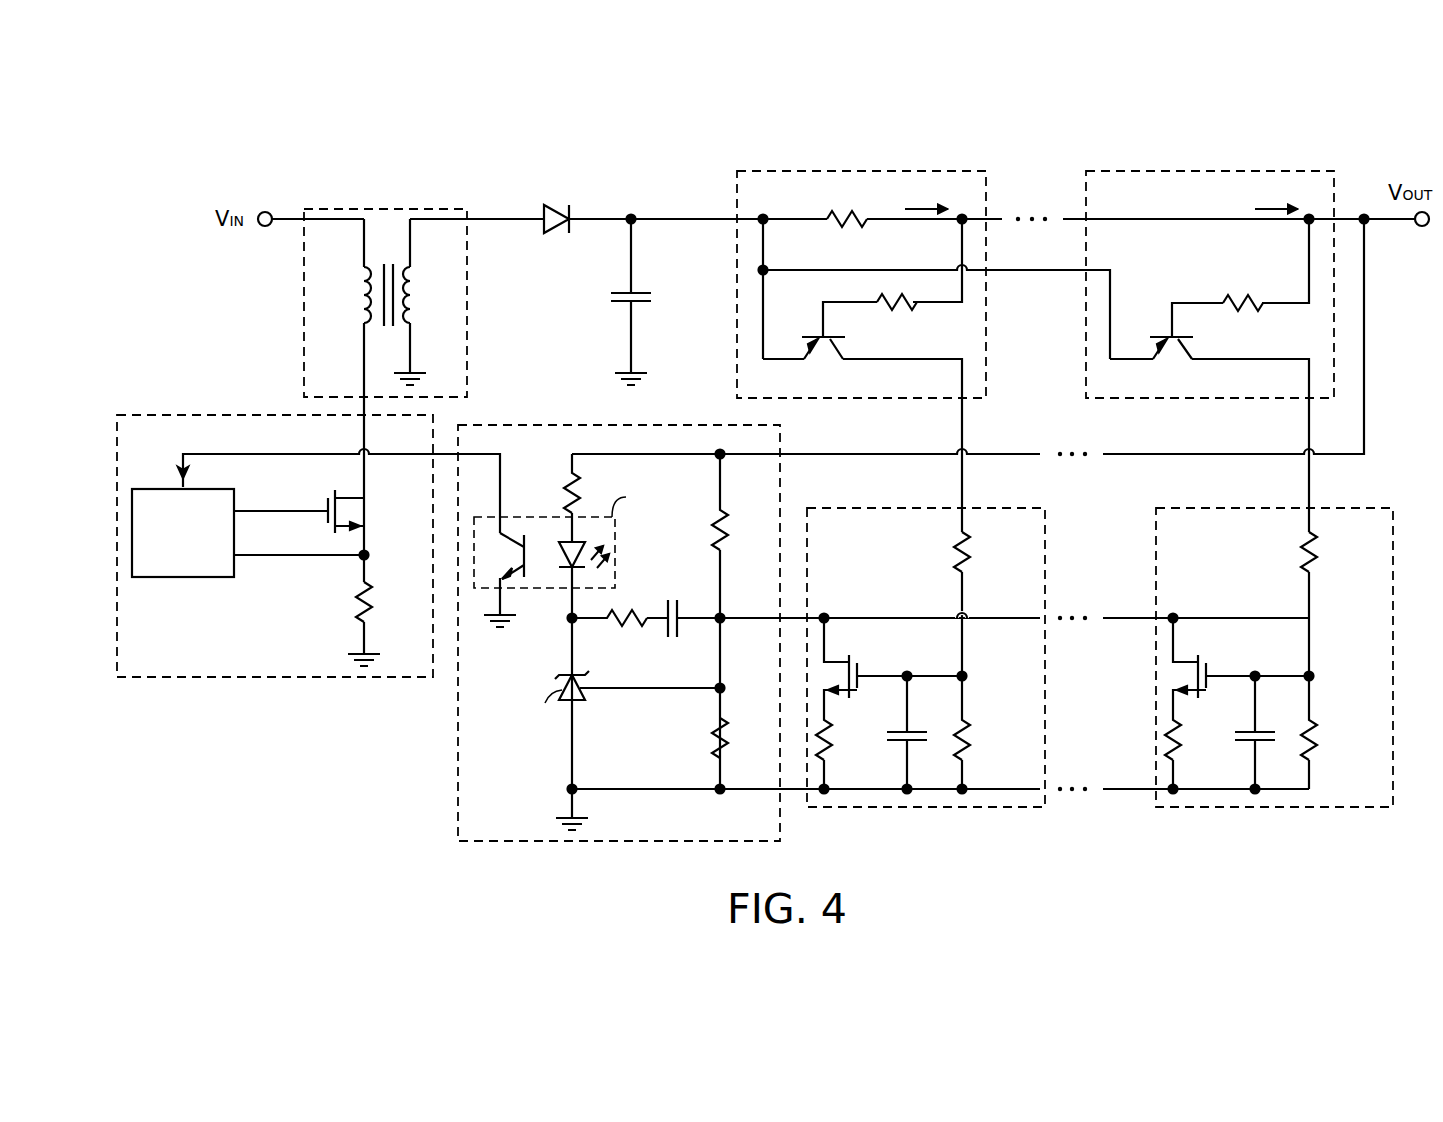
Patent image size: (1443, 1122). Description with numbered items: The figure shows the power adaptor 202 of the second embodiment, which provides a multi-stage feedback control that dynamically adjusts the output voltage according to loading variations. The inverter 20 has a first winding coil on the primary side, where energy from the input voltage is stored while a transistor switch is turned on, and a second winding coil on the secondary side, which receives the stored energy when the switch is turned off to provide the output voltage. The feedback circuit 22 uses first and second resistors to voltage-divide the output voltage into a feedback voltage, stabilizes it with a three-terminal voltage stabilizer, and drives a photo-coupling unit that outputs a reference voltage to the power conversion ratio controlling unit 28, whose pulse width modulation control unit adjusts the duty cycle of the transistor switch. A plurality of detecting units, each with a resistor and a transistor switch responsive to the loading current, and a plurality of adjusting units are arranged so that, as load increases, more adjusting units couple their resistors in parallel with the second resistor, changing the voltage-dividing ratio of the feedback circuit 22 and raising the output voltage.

The inverter 20 is at (377, 207).
The feedback circuit 22 is at (546, 422).
The power conversion ratio controlling unit 28 is at (150, 412).
The power adaptor 202 is at (1320, 118).